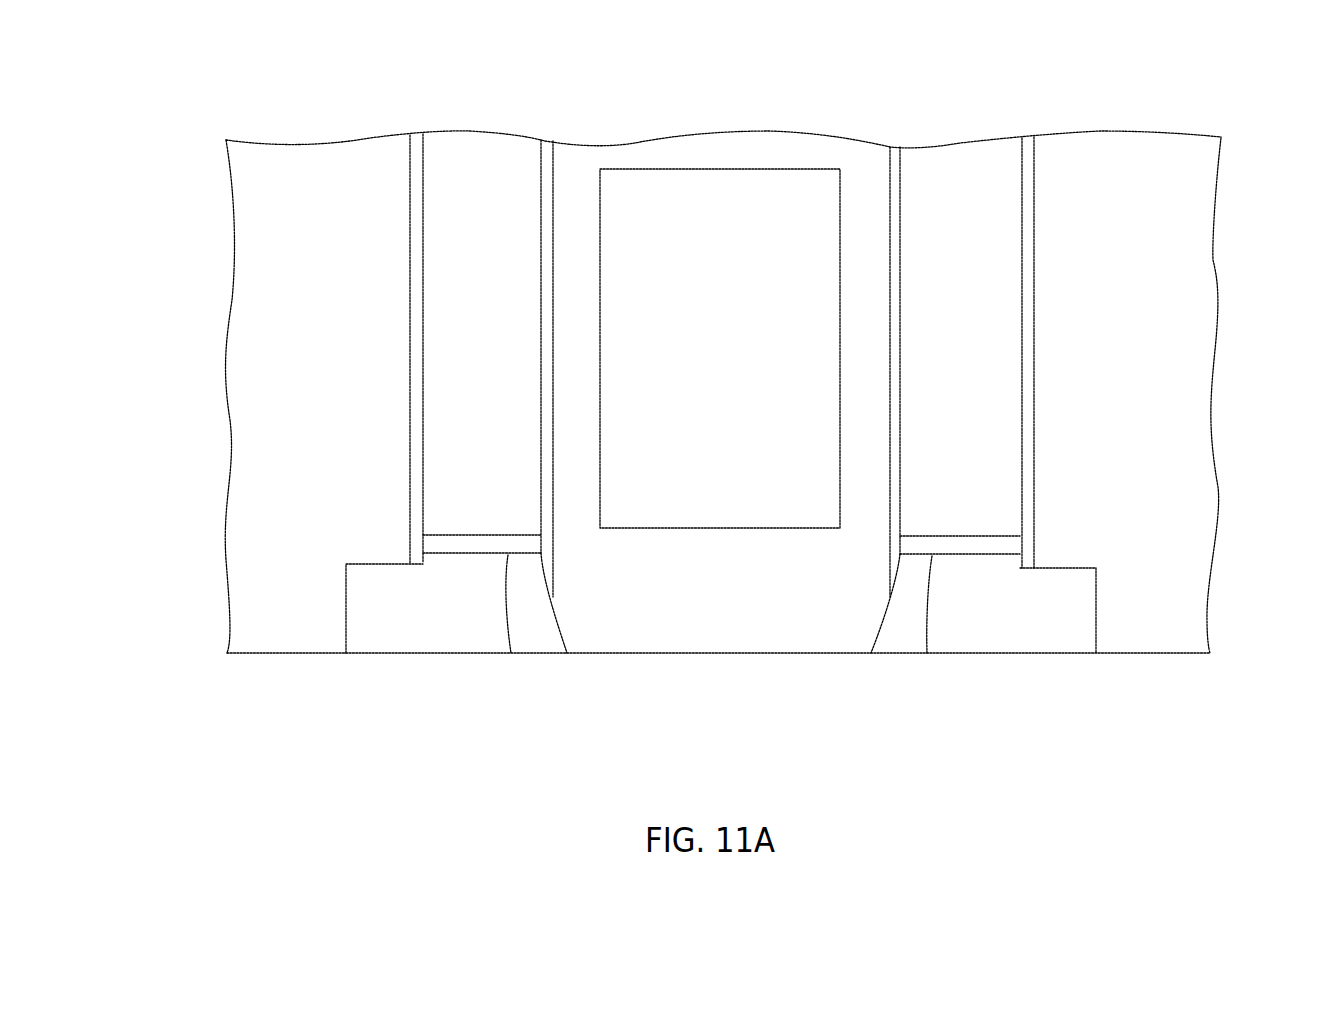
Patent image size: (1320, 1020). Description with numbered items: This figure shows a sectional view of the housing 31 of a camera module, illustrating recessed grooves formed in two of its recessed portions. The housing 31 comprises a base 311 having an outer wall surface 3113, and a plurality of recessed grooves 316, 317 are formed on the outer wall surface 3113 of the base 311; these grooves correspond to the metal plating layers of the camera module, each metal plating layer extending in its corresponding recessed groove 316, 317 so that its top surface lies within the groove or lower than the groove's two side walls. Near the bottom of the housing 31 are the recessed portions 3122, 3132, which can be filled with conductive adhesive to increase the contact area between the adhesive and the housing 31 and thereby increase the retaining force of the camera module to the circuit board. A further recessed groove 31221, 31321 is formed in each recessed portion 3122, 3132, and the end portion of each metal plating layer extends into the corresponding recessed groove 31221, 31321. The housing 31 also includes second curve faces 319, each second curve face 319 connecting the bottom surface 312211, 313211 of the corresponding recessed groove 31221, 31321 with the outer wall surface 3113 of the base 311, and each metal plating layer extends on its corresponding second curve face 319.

The housing 31 is at (1182, 158).
The base 311 is at (1222, 258).
The outer wall surface 3113 is at (325, 158).
The recessed groove 316 is at (466, 158).
The recessed groove 317 is at (970, 158).
The second curve face 319 is at (432, 543).
The recessed portion 3122 is at (345, 638).
The recessed portion 3132 is at (1095, 640).
The recessed groove 31221 is at (481, 551).
The recessed groove 31321 is at (955, 554).
The bottom surface 312211 is at (511, 656).
The bottom surface 313211 is at (927, 656).